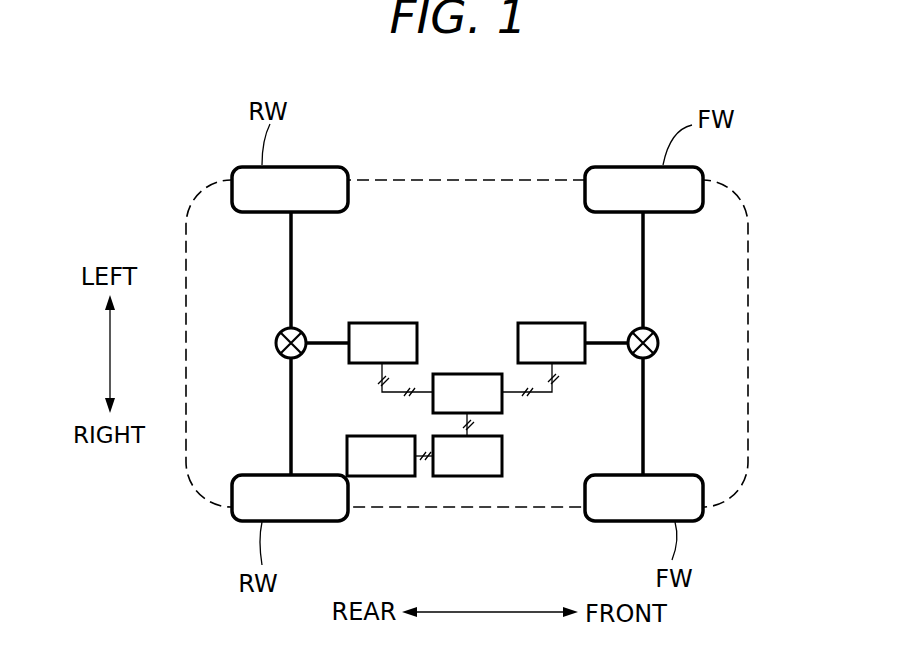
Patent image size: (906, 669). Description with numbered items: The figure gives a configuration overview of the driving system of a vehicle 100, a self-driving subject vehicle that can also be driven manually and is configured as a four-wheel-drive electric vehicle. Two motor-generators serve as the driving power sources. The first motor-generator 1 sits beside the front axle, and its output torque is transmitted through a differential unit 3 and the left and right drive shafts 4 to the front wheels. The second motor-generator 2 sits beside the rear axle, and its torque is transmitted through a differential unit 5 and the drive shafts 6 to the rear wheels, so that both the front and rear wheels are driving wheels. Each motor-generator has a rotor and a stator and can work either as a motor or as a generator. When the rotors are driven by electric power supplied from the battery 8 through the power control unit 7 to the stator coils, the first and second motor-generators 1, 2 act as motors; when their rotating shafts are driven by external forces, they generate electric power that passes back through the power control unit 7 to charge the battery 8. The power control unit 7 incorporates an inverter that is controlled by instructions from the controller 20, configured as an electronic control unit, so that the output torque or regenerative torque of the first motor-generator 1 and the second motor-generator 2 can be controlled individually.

The vehicle 100 is at (651, 85).
The first motor-generator 1 is at (571, 323).
The second motor-generator 2 is at (400, 323).
The differential unit 3 is at (658, 344).
The drive shafts 4 is at (645, 291).
The differential unit 5 is at (276, 340).
The drive shafts 6 is at (291, 263).
The power control unit 7 is at (475, 374).
The battery 8 is at (355, 436).
The controller 20 is at (502, 440).